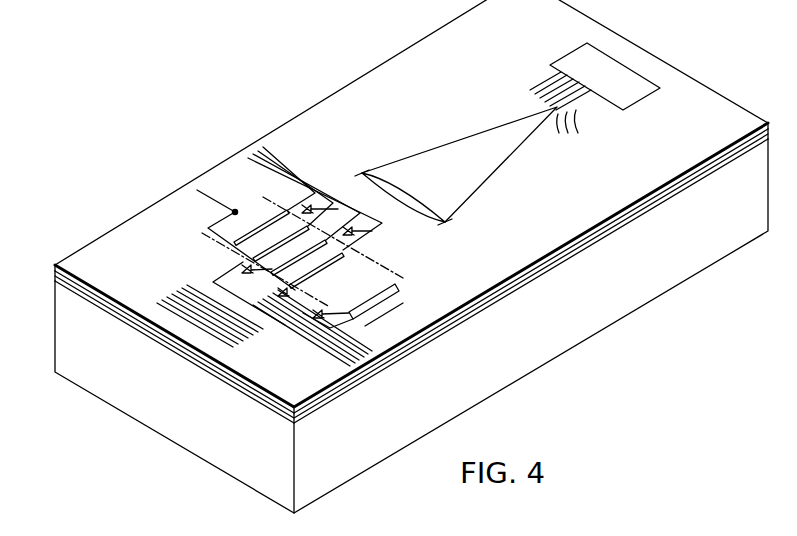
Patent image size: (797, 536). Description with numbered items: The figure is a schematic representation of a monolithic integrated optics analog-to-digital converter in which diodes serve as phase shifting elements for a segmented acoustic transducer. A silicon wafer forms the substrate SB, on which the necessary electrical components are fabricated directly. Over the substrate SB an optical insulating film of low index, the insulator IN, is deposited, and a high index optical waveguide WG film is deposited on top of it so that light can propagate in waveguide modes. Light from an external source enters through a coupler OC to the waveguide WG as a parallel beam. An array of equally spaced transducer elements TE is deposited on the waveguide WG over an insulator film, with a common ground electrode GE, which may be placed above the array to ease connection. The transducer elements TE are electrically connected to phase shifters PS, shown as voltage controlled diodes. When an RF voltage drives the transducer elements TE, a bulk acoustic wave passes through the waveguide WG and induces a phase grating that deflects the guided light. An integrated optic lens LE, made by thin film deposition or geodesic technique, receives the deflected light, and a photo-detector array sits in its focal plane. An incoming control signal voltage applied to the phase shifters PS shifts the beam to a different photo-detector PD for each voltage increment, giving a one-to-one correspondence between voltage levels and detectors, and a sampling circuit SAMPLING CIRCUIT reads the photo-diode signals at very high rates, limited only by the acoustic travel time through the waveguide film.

The substrate SB is at (57, 334).
The superstrate insulator IN is at (55, 278).
The optical wave guide WG is at (57, 267).
The coupler OC is at (247, 329).
The common ground electrode GE is at (254, 212).
The transducer elements TE is at (337, 249).
The phase shifters PS is at (288, 292).
The integrated optic lens LE is at (416, 198).
The photo-detector PD is at (560, 114).
The sampling circuit SAMPLING CIRCUIT is at (567, 63).